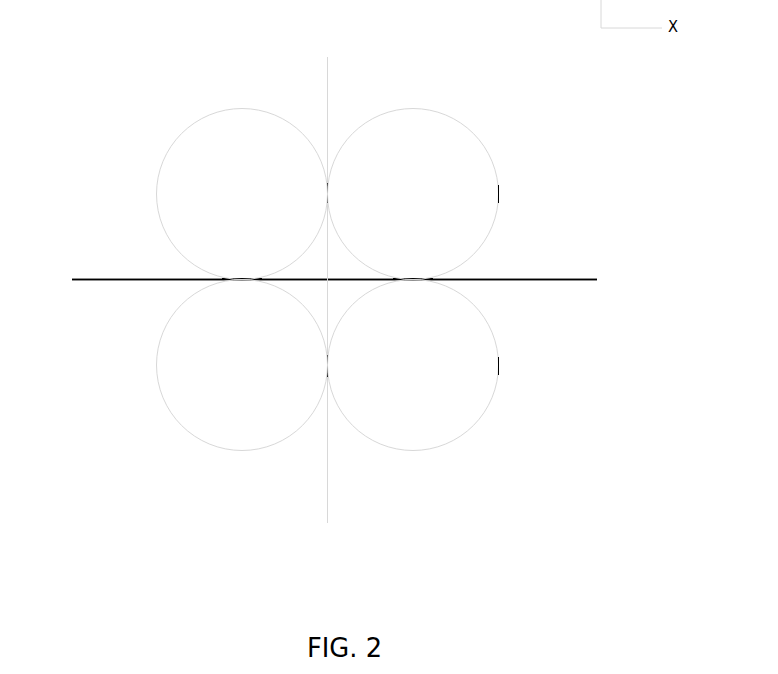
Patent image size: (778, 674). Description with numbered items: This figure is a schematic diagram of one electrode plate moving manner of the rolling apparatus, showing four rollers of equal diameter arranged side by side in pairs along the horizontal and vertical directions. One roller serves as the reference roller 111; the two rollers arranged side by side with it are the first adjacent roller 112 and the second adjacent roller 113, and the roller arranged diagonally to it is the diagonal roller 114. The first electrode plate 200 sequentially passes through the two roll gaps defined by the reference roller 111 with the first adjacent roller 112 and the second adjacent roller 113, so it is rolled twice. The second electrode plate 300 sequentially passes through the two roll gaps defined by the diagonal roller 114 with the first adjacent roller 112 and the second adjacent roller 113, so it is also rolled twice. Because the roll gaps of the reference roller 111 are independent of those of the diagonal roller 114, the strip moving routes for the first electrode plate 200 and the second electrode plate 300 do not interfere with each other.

The reference roller 111 is at (453, 145).
The first adjacent roller 112 is at (255, 148).
The second adjacent roller 113 is at (458, 407).
The diagonal roller 114 is at (227, 430).
The first electrode plate 200 is at (328, 79).
The second electrode plate 300 is at (557, 280).